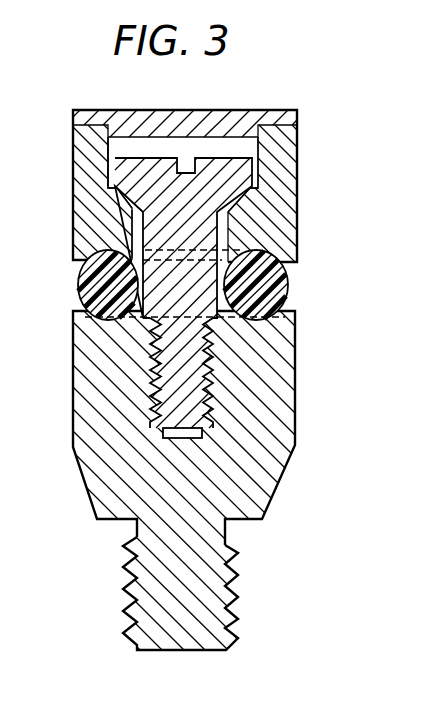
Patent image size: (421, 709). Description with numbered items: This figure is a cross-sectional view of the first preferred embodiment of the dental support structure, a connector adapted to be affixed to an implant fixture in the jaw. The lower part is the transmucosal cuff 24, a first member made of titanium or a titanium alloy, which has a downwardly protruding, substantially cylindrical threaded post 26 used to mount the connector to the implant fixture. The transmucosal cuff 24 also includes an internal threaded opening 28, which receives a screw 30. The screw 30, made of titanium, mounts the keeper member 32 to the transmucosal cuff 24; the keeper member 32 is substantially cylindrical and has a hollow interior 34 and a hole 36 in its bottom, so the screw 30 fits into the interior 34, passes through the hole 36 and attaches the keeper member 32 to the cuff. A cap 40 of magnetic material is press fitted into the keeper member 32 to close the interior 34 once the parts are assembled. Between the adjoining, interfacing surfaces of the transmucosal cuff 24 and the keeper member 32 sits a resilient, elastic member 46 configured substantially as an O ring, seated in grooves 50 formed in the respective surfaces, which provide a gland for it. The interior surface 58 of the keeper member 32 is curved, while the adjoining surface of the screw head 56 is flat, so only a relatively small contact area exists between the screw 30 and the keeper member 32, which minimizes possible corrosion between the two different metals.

The transmucosal cuff 24 is at (280, 486).
The threaded post 26 is at (238, 583).
The internal threaded opening 28 is at (215, 370).
The screw 30 is at (245, 170).
The keeper member 32 is at (296, 200).
The hollow interior 34 is at (228, 153).
The hole 36 is at (95, 300).
The cap 40 is at (195, 110).
The resilient elastic member 46 is at (285, 283).
The grooves 50 is at (297, 238).
The screw head 56 is at (132, 157).
The interior surface 58 is at (132, 210).